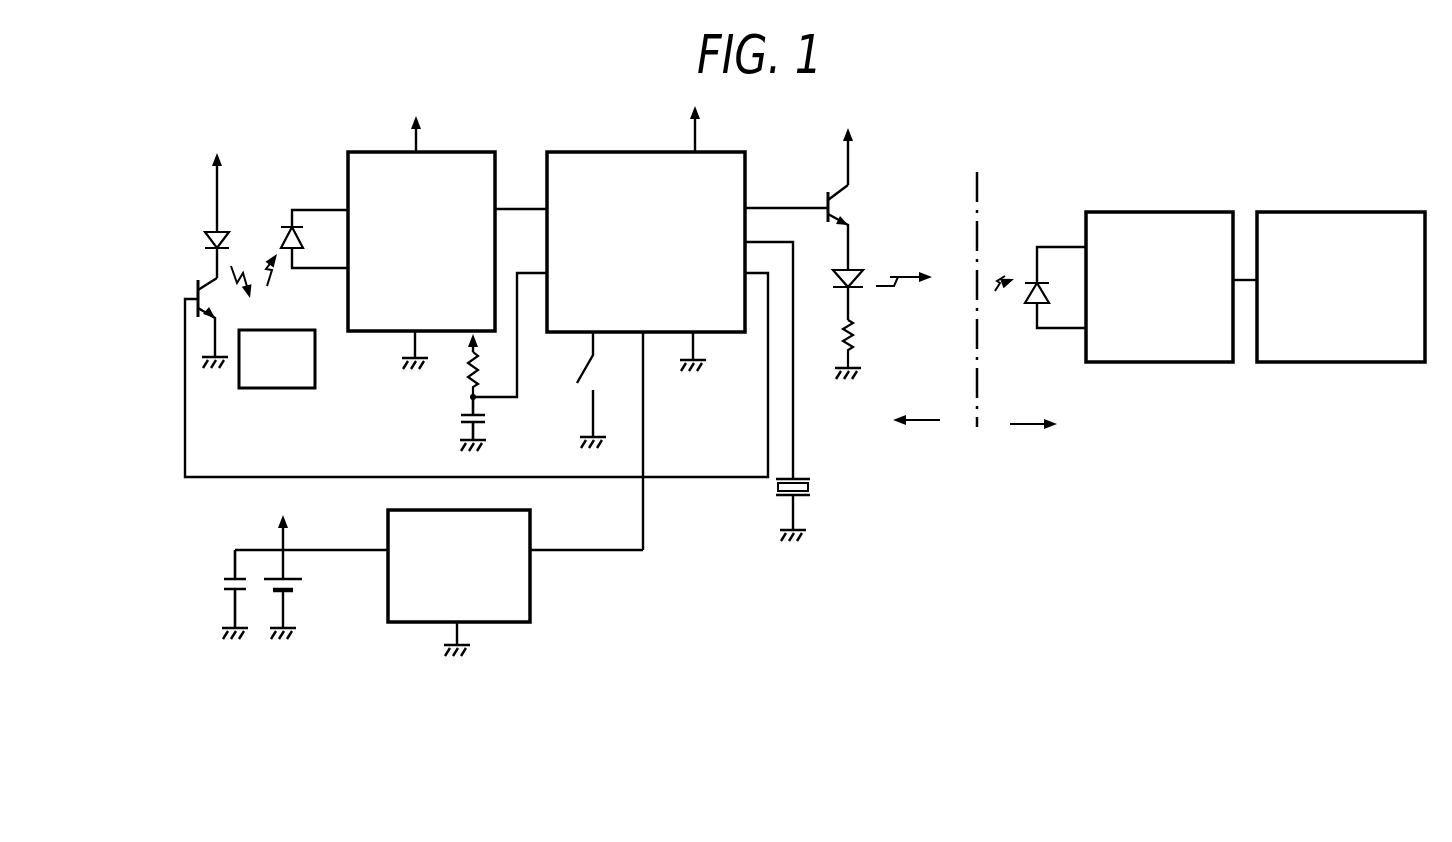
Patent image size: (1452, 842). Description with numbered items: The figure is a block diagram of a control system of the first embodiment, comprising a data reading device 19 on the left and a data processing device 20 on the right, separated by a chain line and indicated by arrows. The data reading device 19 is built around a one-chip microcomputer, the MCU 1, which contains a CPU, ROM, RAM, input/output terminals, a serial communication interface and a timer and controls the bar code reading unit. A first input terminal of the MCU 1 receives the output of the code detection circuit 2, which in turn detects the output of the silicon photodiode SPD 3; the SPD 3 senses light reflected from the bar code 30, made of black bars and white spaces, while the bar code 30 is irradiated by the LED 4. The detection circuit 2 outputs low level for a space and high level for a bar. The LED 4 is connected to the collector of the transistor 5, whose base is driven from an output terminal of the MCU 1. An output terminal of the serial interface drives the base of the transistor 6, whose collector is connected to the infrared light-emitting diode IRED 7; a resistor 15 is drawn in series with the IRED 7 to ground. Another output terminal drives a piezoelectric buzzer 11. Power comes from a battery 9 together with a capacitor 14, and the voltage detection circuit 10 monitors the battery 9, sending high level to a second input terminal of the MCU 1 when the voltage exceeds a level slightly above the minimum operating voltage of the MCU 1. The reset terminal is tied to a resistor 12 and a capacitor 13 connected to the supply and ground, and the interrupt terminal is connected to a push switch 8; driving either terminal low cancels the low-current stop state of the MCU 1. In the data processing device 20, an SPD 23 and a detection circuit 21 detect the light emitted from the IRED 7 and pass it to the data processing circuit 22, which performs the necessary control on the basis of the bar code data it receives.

The one-chip microcomputer (MCU) 1 is at (590, 152).
The code detection circuit 2 is at (368, 152).
The silicon photodiode (SPD) 3 is at (286, 230).
The LED 4 is at (205, 238).
The transistor 5 is at (198, 290).
The transistor 6 is at (828, 198).
The infrared light-emitting diode (IRED) 7 is at (860, 277).
The push switch 8 is at (584, 360).
The battery 9 is at (300, 589).
The voltage detection circuit 10 is at (530, 590).
The piezoelectric buzzer 11 is at (812, 492).
The resistor 12 is at (467, 370).
The capacitor 13 is at (465, 420).
The capacitor 14 is at (224, 586).
The resistor 15 is at (852, 334).
The data reading device 19 is at (900, 419).
The data processing device 20 is at (1051, 423).
The detection circuit 21 is at (1205, 212).
The data processing circuit 22 is at (1402, 212).
The SPD 23 is at (1035, 283).
The code (bar code) 30 is at (315, 370).